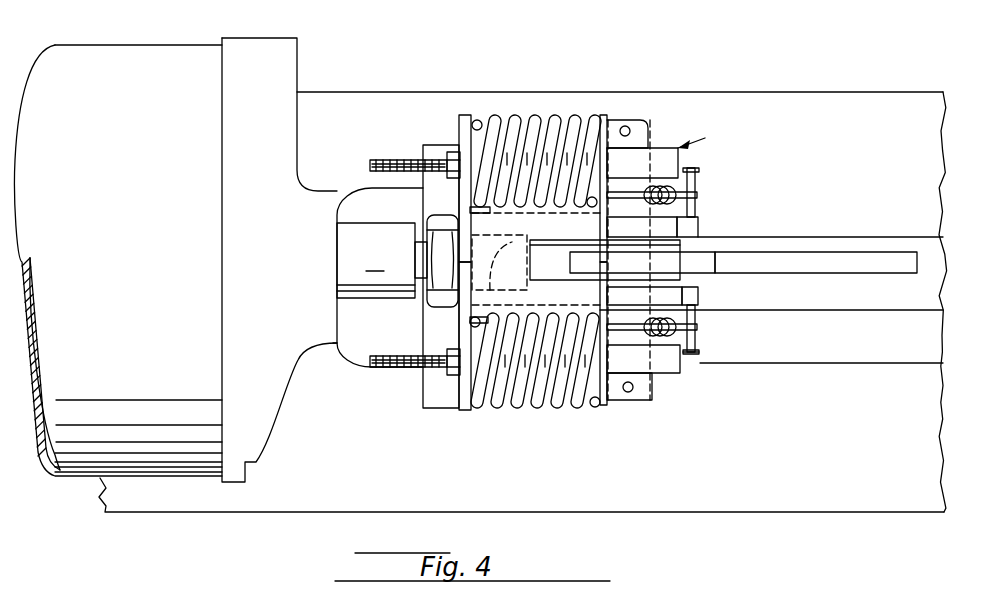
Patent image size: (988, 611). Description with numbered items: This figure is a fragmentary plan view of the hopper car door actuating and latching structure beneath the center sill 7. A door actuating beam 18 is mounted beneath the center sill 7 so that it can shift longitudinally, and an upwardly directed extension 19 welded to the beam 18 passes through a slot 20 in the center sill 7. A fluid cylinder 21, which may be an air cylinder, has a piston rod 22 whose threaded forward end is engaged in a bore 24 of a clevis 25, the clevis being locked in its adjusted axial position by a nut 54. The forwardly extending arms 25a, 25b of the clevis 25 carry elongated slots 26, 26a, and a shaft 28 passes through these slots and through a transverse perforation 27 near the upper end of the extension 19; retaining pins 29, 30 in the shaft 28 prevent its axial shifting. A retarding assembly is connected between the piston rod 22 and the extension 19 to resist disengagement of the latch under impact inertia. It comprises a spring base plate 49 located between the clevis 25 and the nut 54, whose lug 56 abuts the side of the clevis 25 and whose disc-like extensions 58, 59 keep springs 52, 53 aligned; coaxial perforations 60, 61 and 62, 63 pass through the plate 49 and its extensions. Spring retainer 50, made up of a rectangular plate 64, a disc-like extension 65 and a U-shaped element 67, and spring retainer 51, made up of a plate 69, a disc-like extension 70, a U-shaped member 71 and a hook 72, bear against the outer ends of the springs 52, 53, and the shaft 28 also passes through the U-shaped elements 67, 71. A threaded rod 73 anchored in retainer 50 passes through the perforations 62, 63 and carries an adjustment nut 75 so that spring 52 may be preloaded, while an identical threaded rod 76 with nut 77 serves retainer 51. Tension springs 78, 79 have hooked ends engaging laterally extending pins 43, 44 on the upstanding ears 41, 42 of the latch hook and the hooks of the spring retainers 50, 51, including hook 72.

The center sill 7 is at (765, 498).
The door actuating beam 18 is at (855, 252).
The upwardly directed extension 19 is at (783, 263).
The slot 20 is at (855, 310).
The fluid cylinder 21 is at (134, 463).
The piston rod 22 is at (376, 260).
The bore 24 is at (499, 262).
The clevis 25 is at (477, 297).
The clevis arm 25a is at (700, 282).
The clevis arm 25b is at (663, 225).
The elongated slot 26 is at (585, 297).
The elongated slot 26a is at (585, 228).
The transverse perforation 27 is at (650, 263).
The shaft 28 is at (652, 400).
The retaining pin 29 is at (629, 393).
The retaining pin 30 is at (626, 125).
The upstanding ear 41 is at (698, 297).
The upstanding ear 42 is at (698, 224).
The laterally extending pin 43 is at (697, 346).
The laterally extending pin 44 is at (696, 182).
The spring base plate 49 is at (470, 408).
The spring retainer 50 is at (680, 373).
The spring retainer 51 is at (705, 139).
The spring 52 is at (557, 403).
The spring 53 is at (532, 118).
The nut 54 is at (437, 277).
The lug 56 is at (478, 208).
The disc-like extension 58 is at (490, 345).
The disc-like extension 59 is at (488, 127).
The perforation 60 is at (462, 160).
The perforation 61 is at (463, 150).
The perforation 62 is at (457, 378).
The perforation 63 is at (462, 410).
The rectangular plate 64 is at (604, 405).
The disc-like extension 65 is at (591, 385).
The U-shaped element 67 is at (680, 373).
The rectangular plate 69 is at (597, 177).
The disc-like extension 70 is at (606, 115).
The U-shaped member 71 is at (660, 158).
The hook 72 is at (642, 192).
The threaded rod 73 is at (372, 367).
The adjustment nut 75 is at (456, 354).
The threaded rod 76 is at (378, 170).
The adjustment nut 77 is at (441, 276).
The tension spring 78 is at (690, 365).
The tension spring 79 is at (676, 187).